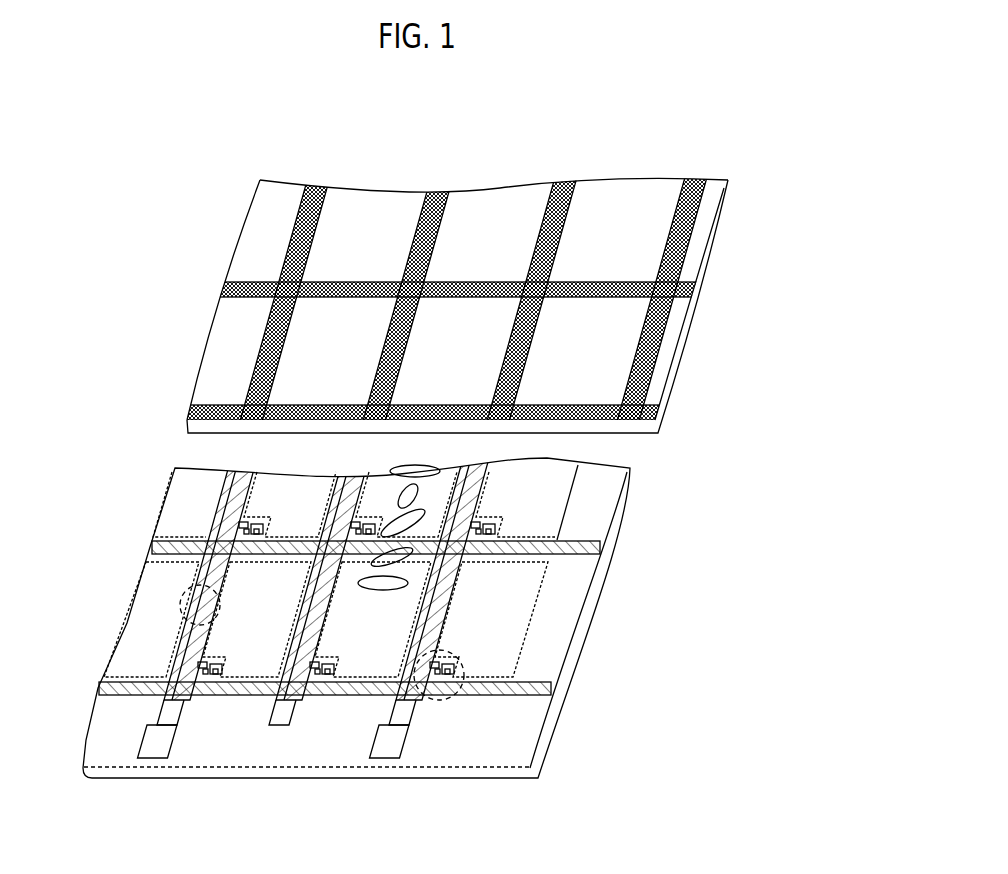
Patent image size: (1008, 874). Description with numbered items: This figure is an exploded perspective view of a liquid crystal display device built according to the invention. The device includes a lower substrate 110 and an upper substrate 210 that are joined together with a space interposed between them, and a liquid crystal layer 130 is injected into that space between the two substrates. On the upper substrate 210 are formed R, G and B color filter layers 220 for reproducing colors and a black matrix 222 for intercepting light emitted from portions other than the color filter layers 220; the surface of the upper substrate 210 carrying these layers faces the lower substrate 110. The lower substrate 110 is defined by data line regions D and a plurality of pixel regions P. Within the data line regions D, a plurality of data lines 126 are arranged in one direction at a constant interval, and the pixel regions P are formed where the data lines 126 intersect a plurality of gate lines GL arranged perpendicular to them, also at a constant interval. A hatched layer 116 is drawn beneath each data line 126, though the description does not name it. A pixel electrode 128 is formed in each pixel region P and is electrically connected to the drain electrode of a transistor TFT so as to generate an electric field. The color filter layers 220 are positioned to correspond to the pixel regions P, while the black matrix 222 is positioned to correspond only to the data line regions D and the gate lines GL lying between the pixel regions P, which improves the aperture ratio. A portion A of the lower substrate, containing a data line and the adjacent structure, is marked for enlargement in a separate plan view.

The lower substrate 110 is at (515, 773).
The semiconductor layer 116 is at (181, 637).
The data line 126 is at (392, 710).
The pixel electrode 128 is at (512, 633).
The liquid crystal layer 130 is at (423, 502).
The upper substrate 210 is at (660, 423).
The color filter layer 220 is at (637, 192).
The black matrix 222 is at (700, 285).
The gate line GL is at (547, 690).
The data line region D is at (382, 760).
The transistor TFT is at (440, 700).
The pixel region P is at (538, 598).
The portion A is at (188, 590).